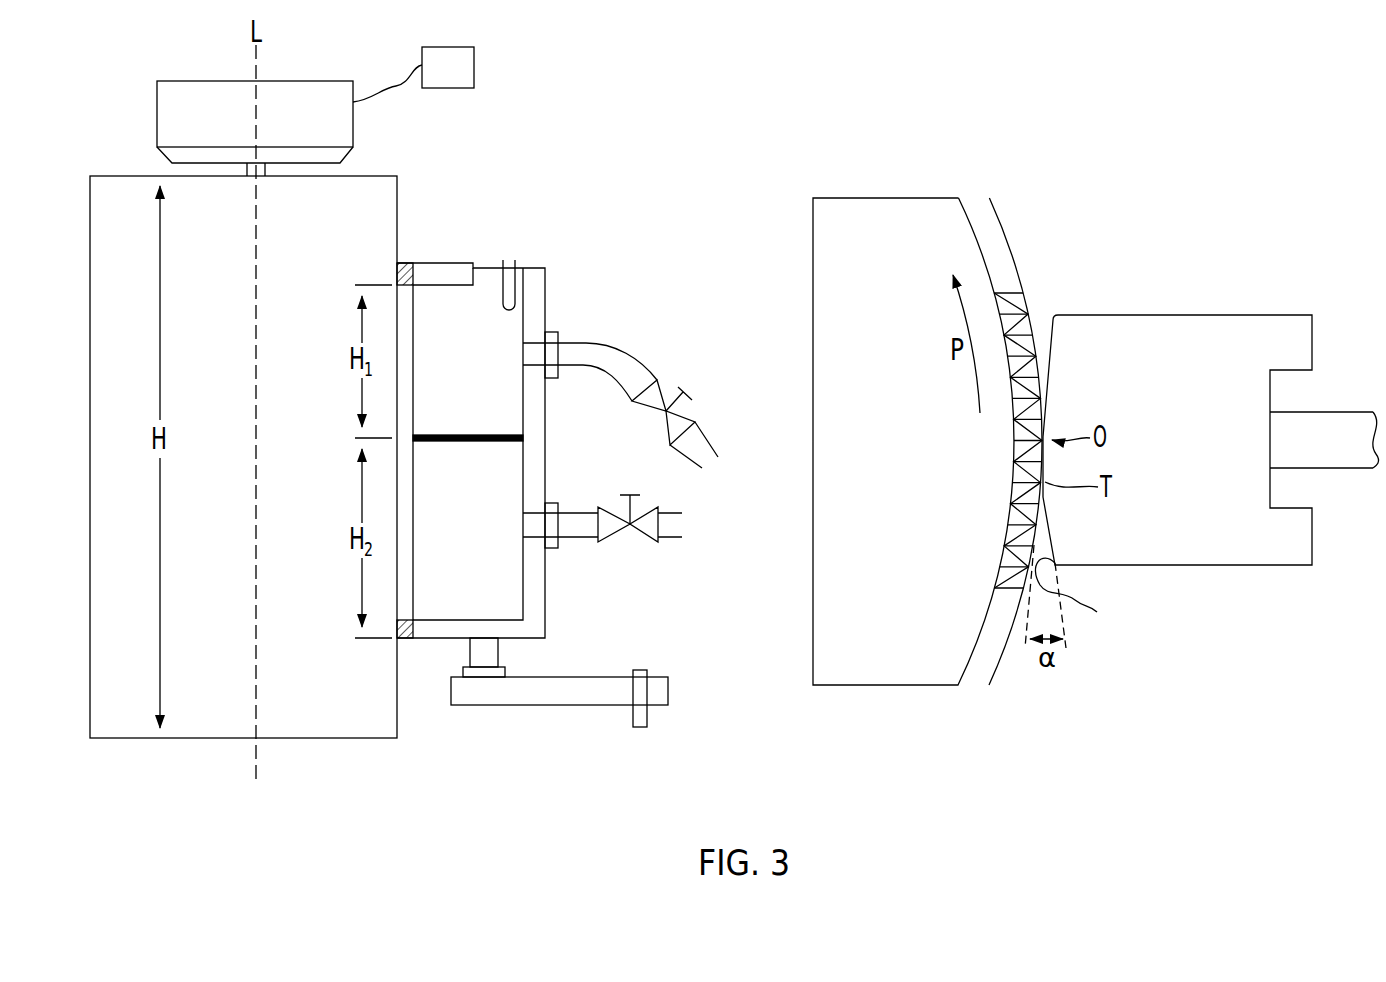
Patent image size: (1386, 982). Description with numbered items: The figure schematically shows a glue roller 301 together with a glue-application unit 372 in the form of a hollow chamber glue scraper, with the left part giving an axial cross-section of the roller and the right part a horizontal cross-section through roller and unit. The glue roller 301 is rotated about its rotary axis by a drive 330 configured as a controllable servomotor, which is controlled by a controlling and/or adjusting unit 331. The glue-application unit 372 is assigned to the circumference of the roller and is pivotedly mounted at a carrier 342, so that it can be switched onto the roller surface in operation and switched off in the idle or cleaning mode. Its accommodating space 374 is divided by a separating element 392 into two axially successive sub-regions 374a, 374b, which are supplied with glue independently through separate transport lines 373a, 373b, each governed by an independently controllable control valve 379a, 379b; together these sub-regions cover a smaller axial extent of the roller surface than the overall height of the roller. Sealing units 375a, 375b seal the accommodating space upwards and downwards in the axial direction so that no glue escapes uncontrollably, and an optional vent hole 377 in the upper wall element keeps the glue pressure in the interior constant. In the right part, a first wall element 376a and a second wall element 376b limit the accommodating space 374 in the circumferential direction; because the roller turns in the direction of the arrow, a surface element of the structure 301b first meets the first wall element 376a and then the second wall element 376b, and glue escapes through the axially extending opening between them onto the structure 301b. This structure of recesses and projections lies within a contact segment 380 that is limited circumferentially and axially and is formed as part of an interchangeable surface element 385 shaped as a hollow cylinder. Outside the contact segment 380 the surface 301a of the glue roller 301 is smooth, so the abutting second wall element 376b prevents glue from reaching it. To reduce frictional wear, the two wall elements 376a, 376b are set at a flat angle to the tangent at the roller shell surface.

The glue roller 301 is at (113, 738).
The smooth surface 301a is at (1012, 225).
The structure 301b is at (1021, 288).
The drive 330 is at (157, 108).
The controlling and/or adjusting unit 331 is at (474, 57).
The carrier 342 is at (562, 705).
The glue-application unit 372 is at (547, 257).
The transport line 373a is at (622, 343).
The transport line 373b is at (581, 540).
The accommodating space 374 is at (1197, 441).
The sub-region of the accommodating space 374a is at (487, 352).
The sub-region of the accommodating space 374b is at (487, 538).
The sealing unit 375a is at (420, 268).
The sealing unit 375b is at (414, 644).
The first wall element 376a is at (405, 327).
The second wall element 376b is at (405, 570).
The vent hole 377 is at (507, 262).
The control valve 379a is at (670, 388).
The control valve 379b is at (646, 542).
The contact segment 380 is at (1012, 482).
The interchangeable surface element 385 is at (990, 210).
The separating element 392 is at (483, 434).